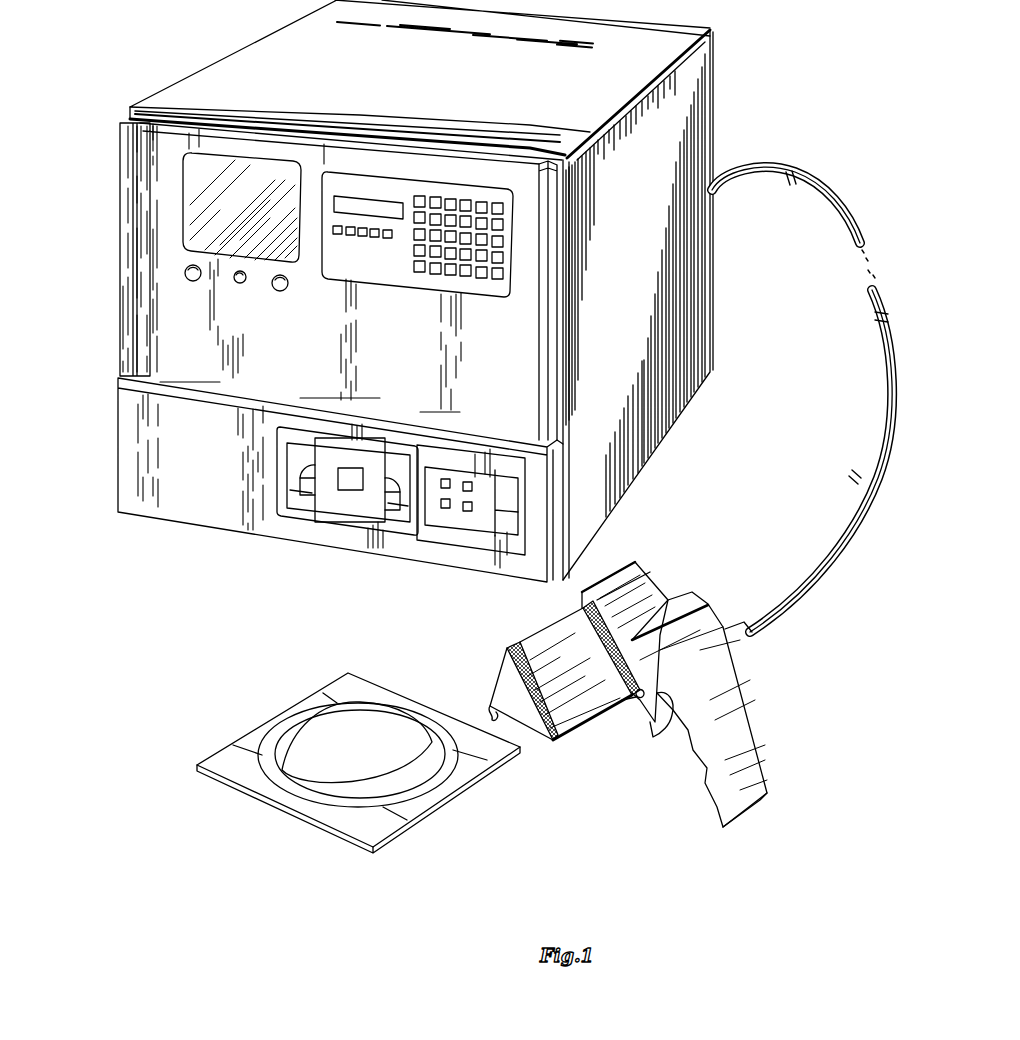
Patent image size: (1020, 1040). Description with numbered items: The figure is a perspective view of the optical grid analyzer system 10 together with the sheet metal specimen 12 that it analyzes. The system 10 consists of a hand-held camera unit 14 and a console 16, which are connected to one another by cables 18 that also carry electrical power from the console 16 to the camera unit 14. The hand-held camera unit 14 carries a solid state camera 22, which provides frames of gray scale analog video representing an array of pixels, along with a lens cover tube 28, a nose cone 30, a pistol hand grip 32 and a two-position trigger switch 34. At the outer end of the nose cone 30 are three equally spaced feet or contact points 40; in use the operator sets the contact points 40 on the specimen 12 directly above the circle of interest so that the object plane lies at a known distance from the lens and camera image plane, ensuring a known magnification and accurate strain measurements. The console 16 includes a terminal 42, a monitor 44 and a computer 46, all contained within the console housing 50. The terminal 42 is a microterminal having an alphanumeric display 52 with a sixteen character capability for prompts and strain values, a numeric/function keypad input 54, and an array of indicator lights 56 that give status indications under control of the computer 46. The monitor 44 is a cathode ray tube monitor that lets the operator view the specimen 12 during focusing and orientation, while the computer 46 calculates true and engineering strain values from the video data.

The optical grid analyzer system 10 is at (288, 565).
The sheet metal specimen 12 is at (312, 820).
The hand-held camera unit 14 is at (674, 739).
The console 16 is at (126, 433).
The cables 18 is at (866, 393).
The solid state camera 22 is at (608, 590).
The lens cover tube 28 is at (577, 738).
The nose cone 30 is at (492, 687).
The pistol hand grip 32 is at (746, 758).
The two-position trigger switch 34 is at (640, 706).
The contact points 40 is at (490, 725).
The terminal 42 is at (402, 187).
The monitor 44 is at (218, 190).
The computer 46 is at (190, 504).
The console housing 50 is at (640, 446).
The alphanumeric display 52 is at (348, 204).
The numeric/function keypad input 54 is at (455, 206).
The indicator lights 56 is at (337, 232).